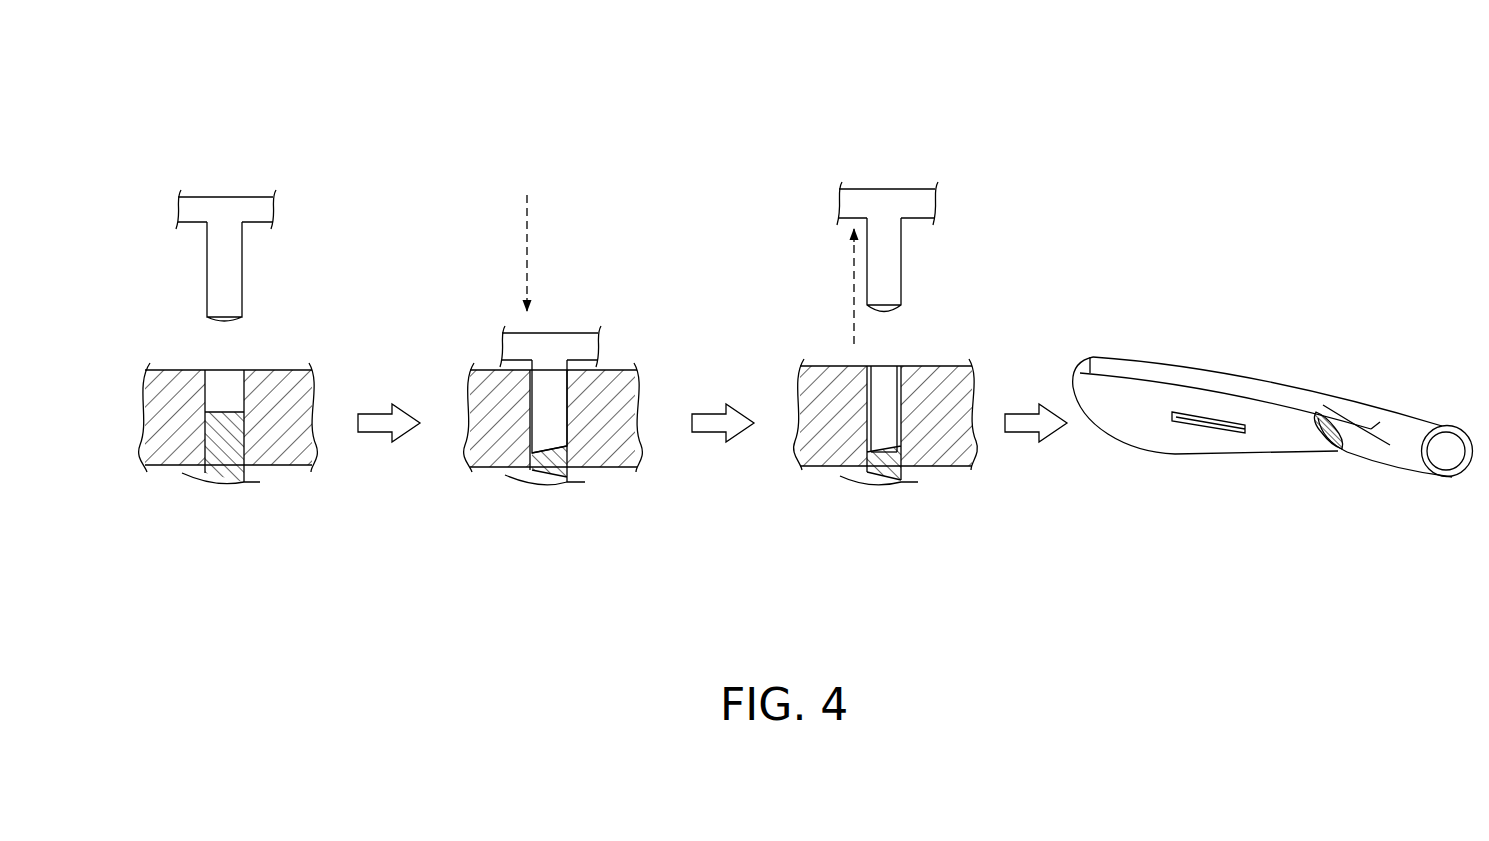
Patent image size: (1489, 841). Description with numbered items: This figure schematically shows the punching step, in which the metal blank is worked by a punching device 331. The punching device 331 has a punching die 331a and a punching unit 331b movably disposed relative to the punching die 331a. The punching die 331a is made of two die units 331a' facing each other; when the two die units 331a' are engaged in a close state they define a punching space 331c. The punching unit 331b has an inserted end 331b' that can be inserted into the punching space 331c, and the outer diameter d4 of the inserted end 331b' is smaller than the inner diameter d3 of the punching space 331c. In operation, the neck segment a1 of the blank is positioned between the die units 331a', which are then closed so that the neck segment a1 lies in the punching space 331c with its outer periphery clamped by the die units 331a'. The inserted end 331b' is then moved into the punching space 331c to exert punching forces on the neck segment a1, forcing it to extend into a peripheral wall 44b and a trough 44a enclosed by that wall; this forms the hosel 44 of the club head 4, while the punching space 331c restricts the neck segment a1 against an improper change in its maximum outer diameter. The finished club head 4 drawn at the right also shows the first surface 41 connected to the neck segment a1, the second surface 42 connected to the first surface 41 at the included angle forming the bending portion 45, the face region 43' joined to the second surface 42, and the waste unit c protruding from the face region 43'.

The punching device 331 is at (199, 126).
The punching unit 331b is at (599, 247).
The inserted end 331b' is at (609, 370).
The punching space 331c is at (211, 376).
The punching die 331a is at (225, 474).
The die units 331a' is at (226, 497).
The outer diameter of the inserted end d4 is at (172, 290).
The inner diameter of the punching space d3 is at (165, 398).
The neck segment a1 is at (205, 441).
The hosel 44 is at (532, 468).
The trough 44a is at (888, 455).
The peripheral wall 44b is at (899, 436).
The club head 4 is at (1324, 272).
The first surface 41 is at (1340, 408).
The second surface 42 is at (1283, 392).
The face region 43' is at (1222, 446).
The waste unit c is at (1193, 428).
The bending portion 45 is at (1321, 463).